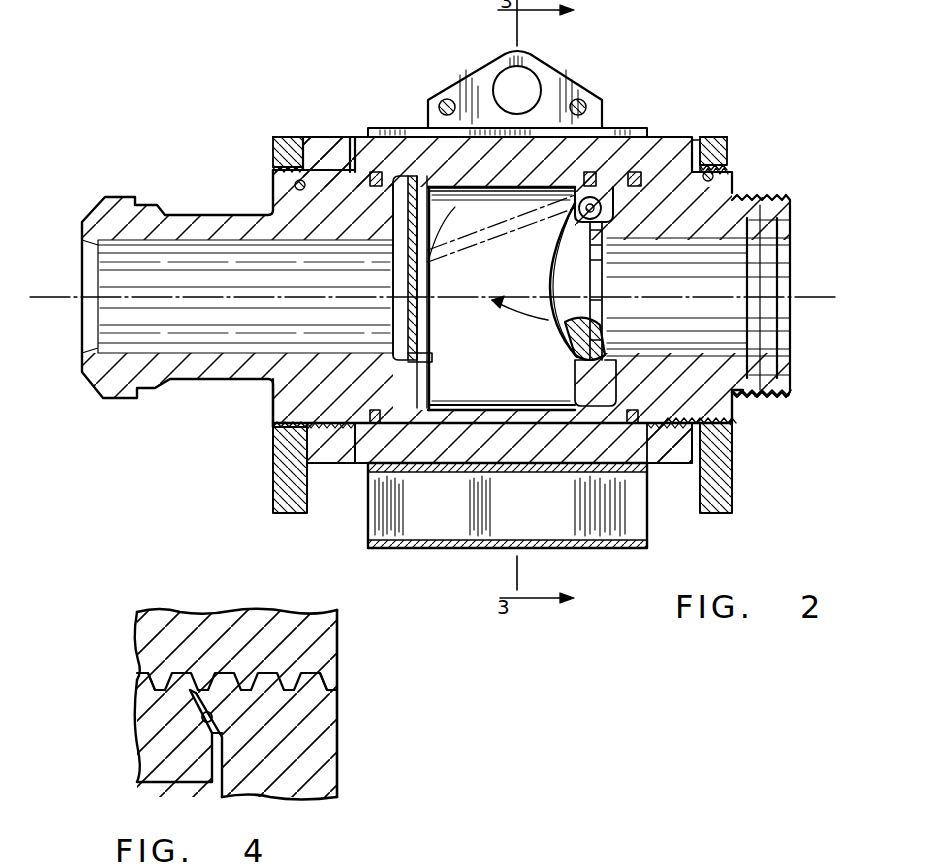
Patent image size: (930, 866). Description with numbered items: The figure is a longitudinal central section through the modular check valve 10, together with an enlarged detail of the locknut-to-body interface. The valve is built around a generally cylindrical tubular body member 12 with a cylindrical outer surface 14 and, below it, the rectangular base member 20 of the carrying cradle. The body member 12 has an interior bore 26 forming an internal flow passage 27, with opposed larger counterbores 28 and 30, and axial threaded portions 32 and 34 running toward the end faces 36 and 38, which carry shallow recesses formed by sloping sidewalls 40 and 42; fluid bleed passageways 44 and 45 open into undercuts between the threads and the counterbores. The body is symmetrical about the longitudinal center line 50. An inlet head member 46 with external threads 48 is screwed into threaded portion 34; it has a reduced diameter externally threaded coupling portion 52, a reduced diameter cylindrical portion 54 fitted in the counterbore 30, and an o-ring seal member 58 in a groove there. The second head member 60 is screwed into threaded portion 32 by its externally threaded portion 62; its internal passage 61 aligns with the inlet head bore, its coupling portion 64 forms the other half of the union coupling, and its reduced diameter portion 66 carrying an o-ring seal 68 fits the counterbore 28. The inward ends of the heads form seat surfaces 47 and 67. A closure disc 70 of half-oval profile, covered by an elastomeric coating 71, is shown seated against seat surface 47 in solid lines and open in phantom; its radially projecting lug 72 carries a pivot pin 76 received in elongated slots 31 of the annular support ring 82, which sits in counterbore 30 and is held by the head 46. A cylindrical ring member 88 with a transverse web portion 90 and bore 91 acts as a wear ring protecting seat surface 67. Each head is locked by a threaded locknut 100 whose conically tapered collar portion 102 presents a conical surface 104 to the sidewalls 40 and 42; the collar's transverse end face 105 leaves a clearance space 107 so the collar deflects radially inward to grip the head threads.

In FIG. 2, the modular check valve 10 is at (668, 104).
In FIG. 2, the body member 12 is at (385, 148).
In FIG. 4, the body member 12 is at (185, 770).
In FIG. 2, the outer surface 14 is at (355, 150).
In FIG. 2, the base member 20 is at (647, 546).
In FIG. 2, the interior bore 26 is at (478, 402).
In FIG. 2, the internal flow passage 27 is at (478, 289).
In FIG. 2, the counterbore 28 is at (390, 168).
In FIG. 2, the counterbore 30 is at (614, 136).
In FIG. 2, the elongated slots 31 is at (618, 207).
In FIG. 2, the axial threaded portion 32 is at (296, 188).
In FIG. 2, the axial threaded portion 34 is at (720, 196).
In FIG. 4, the axial threaded portion 34 is at (158, 682).
In FIG. 2, the end face 36 is at (272, 143).
In FIG. 2, the end face 38 is at (732, 143).
In FIG. 2, the sloping sidewall 40 is at (300, 172).
In FIG. 2, the sloping sidewall 42 is at (714, 178).
In FIG. 4, the sloping sidewall 42 is at (202, 720).
In FIG. 2, the fluid bleed passageway 44 is at (335, 126).
In FIG. 2, the fluid bleed passageway 45 is at (672, 160).
In FIG. 2, the inlet head member 46 is at (745, 410).
In FIG. 4, the inlet head member 46 is at (340, 637).
In FIG. 2, the seat surface 47 is at (600, 345).
In FIG. 2, the external threads 48 is at (734, 452).
In FIG. 4, the external threads 48 is at (330, 690).
In FIG. 2, the longitudinal center line 50 is at (817, 297).
In FIG. 2, the reduced diameter externally threaded portion 52 is at (790, 200).
In FIG. 2, the reduced diameter cylindrical portion 54 is at (605, 400).
In FIG. 2, the o-ring seal member 58 is at (650, 414).
In FIG. 2, the second head member 60 is at (273, 408).
In FIG. 2, the internal passage 61 is at (162, 345).
In FIG. 2, the externally threaded portion 62 is at (280, 440).
In FIG. 2, the coupling portion 64 is at (180, 213).
In FIG. 2, the reduced diameter portion 66 is at (390, 432).
In FIG. 2, the seat surface 67 is at (432, 357).
In FIG. 2, the o-ring seal 68 is at (372, 415).
In FIG. 2, the closure disc 70 is at (555, 277).
In FIG. 2, the elastomeric coating 71 is at (565, 340).
In FIG. 2, the radially projecting lug 72 is at (545, 178).
In FIG. 2, the pivot pin 76 is at (580, 188).
In FIG. 2, the annular support ring 82 is at (565, 430).
In FIG. 2, the cylindrical ring member 88 is at (430, 422).
In FIG. 2, the transverse web portion 90 is at (432, 372).
In FIG. 2, the bore 91 is at (393, 320).
In FIG. 2, the threaded locknut 100 is at (273, 160).
In FIG. 4, the threaded locknut 100 is at (340, 745).
In FIG. 2, the conically tapered collar portion 102 is at (322, 452).
In FIG. 4, the conically tapered collar portion 102 is at (236, 630).
In FIG. 4, the conical surface 104 is at (262, 712).
In FIG. 4, the transverse end face 105 is at (193, 692).
In FIG. 4, the clearance space 107 is at (175, 682).